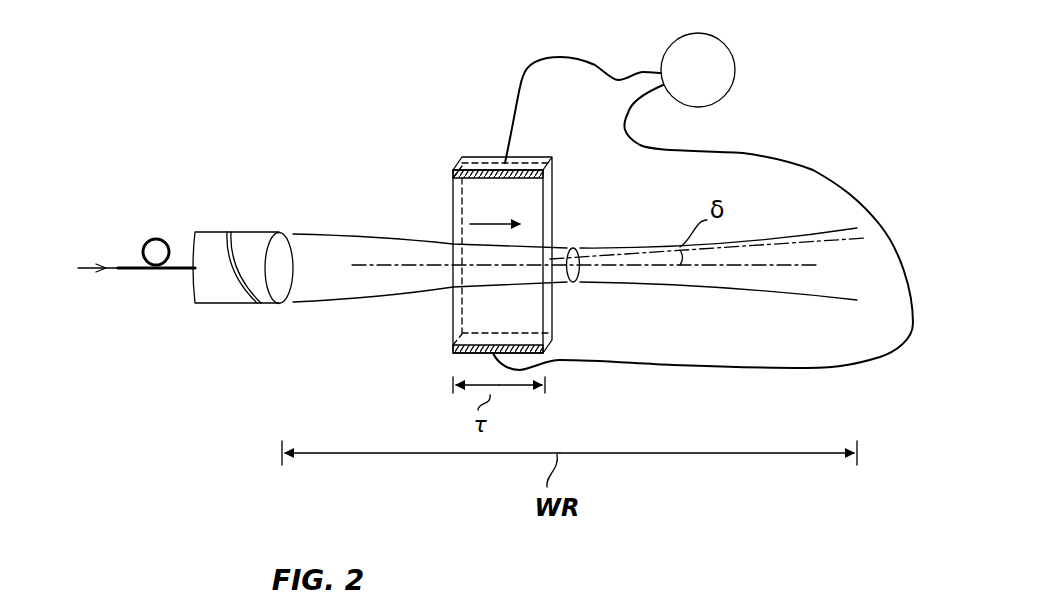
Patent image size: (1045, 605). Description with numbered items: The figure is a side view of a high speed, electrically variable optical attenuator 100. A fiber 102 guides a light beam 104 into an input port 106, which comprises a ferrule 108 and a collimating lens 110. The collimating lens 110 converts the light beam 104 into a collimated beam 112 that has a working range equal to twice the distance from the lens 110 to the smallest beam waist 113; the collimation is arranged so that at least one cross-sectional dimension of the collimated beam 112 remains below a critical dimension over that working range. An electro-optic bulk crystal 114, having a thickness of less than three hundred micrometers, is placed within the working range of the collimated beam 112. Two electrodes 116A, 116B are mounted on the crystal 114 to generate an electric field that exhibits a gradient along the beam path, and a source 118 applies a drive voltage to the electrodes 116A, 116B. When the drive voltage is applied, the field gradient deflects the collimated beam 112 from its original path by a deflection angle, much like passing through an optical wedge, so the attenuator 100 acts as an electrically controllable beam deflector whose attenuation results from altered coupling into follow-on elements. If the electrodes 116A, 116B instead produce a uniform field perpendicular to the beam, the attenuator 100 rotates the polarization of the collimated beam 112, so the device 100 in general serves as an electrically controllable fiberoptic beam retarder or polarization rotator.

The electrically variable optical attenuator 100 is at (156, 88).
The fiber 102 is at (147, 236).
The light beam 104 is at (83, 270).
The input port 106 is at (243, 246).
The ferrule 108 is at (221, 304).
The collimating lens 110 is at (271, 305).
The collimated beam 112 is at (338, 233).
The smallest beam waist 113 is at (585, 250).
The electro-optic bulk crystal 114 is at (456, 262).
The electrode 116A is at (455, 350).
The electrode 116B is at (452, 173).
The source 118 is at (725, 97).